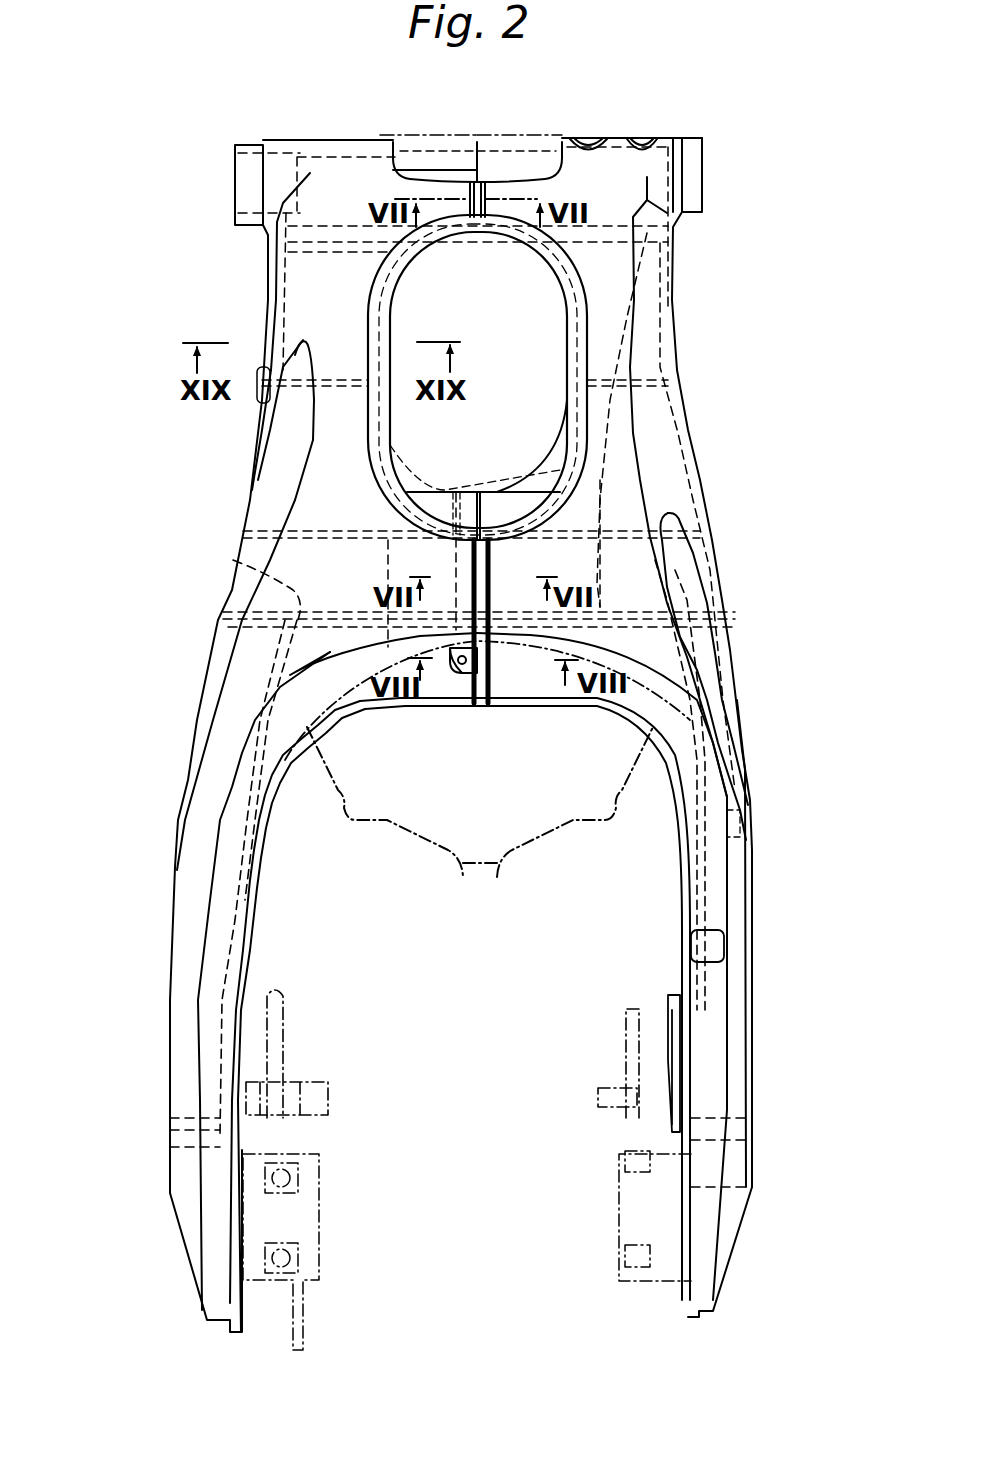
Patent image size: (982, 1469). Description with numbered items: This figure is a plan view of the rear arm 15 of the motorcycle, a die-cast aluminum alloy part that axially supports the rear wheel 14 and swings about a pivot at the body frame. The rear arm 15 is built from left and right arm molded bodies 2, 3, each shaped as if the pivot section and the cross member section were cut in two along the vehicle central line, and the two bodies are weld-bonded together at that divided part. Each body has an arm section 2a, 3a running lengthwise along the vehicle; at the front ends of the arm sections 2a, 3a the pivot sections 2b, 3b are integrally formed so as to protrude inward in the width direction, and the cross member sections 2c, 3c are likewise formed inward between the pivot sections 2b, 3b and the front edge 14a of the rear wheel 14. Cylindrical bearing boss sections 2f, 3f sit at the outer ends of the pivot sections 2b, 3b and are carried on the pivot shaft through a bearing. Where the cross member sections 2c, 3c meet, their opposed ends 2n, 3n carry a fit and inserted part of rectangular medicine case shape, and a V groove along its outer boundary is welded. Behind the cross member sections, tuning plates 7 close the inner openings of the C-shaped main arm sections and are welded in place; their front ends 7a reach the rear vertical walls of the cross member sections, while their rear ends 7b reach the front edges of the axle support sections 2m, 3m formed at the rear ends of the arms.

The rear arm 15 is at (776, 311).
The left arm molded body 2 is at (250, 492).
The right arm molded body 3 is at (691, 440).
The left arm section 2a is at (219, 606).
The right arm section 3a is at (724, 577).
The left pivot section 2b is at (380, 143).
The right pivot section 3b is at (567, 140).
The left cross member section 2c is at (403, 711).
The right cross member section 3c is at (563, 711).
The left bearing boss section 2f is at (250, 143).
The right bearing boss section 3f is at (688, 139).
The left axle support section 2m is at (195, 1277).
The right axle support section 3m is at (724, 1262).
The opposed end of left cross member section 2n is at (468, 141).
The opposed end of right cross member section 3n is at (490, 141).
The tuning plate 7 is at (250, 780).
The front end of tuning plate 7a is at (233, 560).
The rear end of tuning plate 7b is at (220, 1127).
The rear wheel 14 is at (690, 657).
The front edge of rear wheel 14a is at (292, 1008).